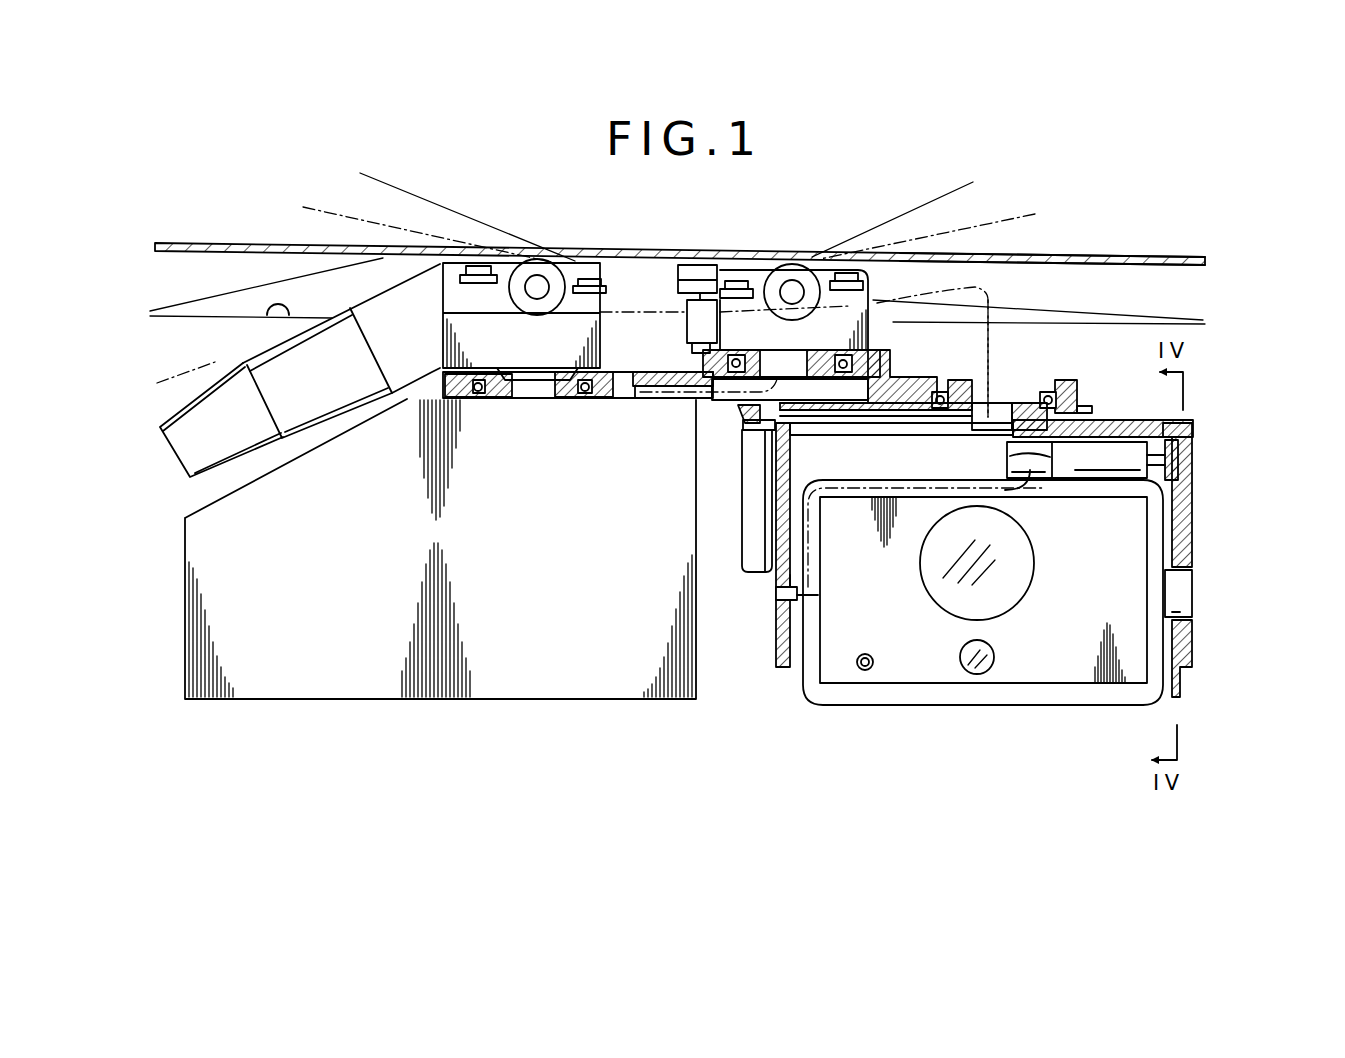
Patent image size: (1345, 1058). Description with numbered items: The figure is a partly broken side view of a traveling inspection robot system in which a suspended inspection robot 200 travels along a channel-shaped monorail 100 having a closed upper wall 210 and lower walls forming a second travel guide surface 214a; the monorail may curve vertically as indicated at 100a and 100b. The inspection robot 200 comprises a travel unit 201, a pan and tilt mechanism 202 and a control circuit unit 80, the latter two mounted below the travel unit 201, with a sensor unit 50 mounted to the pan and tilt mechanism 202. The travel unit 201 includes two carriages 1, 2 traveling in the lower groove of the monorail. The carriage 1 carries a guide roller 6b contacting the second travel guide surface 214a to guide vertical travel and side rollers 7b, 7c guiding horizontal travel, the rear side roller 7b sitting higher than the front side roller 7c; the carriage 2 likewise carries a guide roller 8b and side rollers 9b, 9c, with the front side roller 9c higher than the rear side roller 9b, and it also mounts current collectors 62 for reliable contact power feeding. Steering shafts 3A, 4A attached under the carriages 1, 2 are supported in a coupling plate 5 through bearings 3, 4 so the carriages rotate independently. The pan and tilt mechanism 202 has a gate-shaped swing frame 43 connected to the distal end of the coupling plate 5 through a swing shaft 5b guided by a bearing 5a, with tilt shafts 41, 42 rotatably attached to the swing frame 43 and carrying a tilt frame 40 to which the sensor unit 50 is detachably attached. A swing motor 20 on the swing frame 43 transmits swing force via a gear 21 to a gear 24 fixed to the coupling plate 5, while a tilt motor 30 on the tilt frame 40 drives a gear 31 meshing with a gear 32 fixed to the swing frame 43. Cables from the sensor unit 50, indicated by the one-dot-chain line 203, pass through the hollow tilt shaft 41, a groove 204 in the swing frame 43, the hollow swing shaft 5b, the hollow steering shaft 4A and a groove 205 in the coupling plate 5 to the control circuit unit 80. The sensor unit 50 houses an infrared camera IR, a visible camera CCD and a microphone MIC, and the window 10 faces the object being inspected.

The monorail 100 is at (240, 240).
The vertically curved monorail portion 100a is at (398, 233).
The vertically curved monorail portion 100b is at (237, 310).
The upper wall 210 is at (1055, 257).
The second travel guide surface 214a is at (270, 316).
The carriage 1 is at (455, 346).
The window member 10 is at (350, 383).
The side roller 7b is at (477, 262).
The guide roller 6b is at (543, 257).
The side roller 7c is at (587, 277).
The current collectors 62 is at (688, 278).
The side roller 9b is at (733, 280).
The guide roller 8b is at (782, 265).
The side roller 9c is at (847, 270).
The travel unit 201 is at (882, 273).
The carriage 2 is at (850, 325).
The steering shaft 4A is at (750, 333).
The bearing 4 is at (880, 358).
The bearing 3 is at (578, 400).
The steering shaft 3A is at (497, 400).
The groove 205 is at (640, 400).
The coupling plate 5 is at (652, 400).
The gear 24 is at (1080, 411).
The bearing 5a is at (1050, 380).
The swing shaft 5b is at (960, 427).
The one-dot-chain line 203 is at (992, 333).
The inspection robot 200 is at (1217, 410).
The groove 204 is at (853, 438).
The gear 31 is at (1157, 420).
The gear 21 is at (742, 415).
The swing motor 20 is at (757, 507).
The pan and tilt mechanism 202 is at (768, 665).
The tilt shaft 41 is at (775, 597).
The tilt frame 40 is at (930, 690).
The gear 32 is at (1147, 507).
The tilt motor 30 is at (1007, 462).
The swing frame 43 is at (1183, 537).
The tilt shaft 42 is at (1177, 604).
The sensor unit 50 is at (1083, 660).
The infrared lens IR is at (988, 564).
The CCD sensor CCD is at (1003, 661).
The microphone MIC is at (866, 649).
The control circuit unit 80 is at (413, 665).